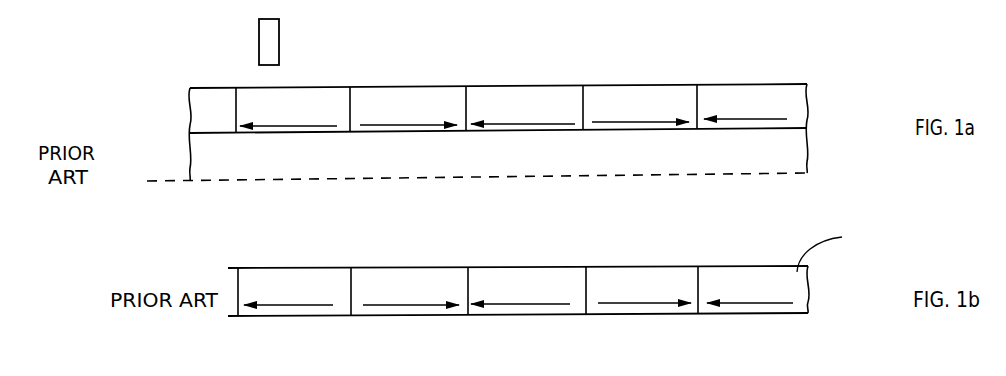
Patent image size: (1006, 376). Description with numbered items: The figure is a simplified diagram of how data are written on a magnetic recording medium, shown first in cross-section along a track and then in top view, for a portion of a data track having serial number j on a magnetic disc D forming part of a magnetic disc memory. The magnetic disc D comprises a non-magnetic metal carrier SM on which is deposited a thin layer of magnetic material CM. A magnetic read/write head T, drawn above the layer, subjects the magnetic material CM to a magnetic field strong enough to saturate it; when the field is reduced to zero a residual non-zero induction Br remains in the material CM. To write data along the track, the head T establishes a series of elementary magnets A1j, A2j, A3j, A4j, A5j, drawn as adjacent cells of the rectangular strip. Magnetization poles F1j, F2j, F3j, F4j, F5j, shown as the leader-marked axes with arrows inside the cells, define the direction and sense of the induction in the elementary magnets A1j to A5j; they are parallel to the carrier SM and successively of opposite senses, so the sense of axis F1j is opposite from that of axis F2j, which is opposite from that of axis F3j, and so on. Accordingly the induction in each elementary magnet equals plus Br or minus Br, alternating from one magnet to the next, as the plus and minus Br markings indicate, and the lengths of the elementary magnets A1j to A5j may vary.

In FIG. 1A, the magnetic read/write head T is at (259, 52).
In FIG. 1A, the thin layer of magnetic material CM is at (190, 118).
In FIG. 1A, the non-magnetic metal carrier SM is at (810, 152).
In FIG. 1A, the magnetic disc D is at (188, 178).
In FIG. 1A, the elementary magnet A1j is at (303, 87).
In FIG. 1B, the elementary magnet A1j is at (277, 322).
In FIG. 1A, the elementary magnet A2j is at (392, 86).
In FIG. 1B, the elementary magnet A2j is at (396, 318).
In FIG. 1A, the elementary magnet A3j is at (525, 86).
In FIG. 1B, the elementary magnet A3j is at (508, 318).
In FIG. 1A, the elementary magnet A4j is at (650, 85).
In FIG. 1B, the elementary magnet A4j is at (625, 318).
In FIG. 1A, the elementary magnet A5j is at (757, 84).
In FIG. 1B, the elementary magnet A5j is at (783, 318).
In FIG. 1A, the magnetization pole F1j is at (297, 128).
In FIG. 1B, the magnetization pole F1j is at (278, 300).
In FIG. 1A, the magnetization pole F2j is at (416, 127).
In FIG. 1B, the magnetization pole F2j is at (394, 300).
In FIG. 1A, the magnetization pole F3j is at (522, 126).
In FIG. 1B, the magnetization pole F3j is at (505, 300).
In FIG. 1A, the magnetization pole F4j is at (638, 124).
In FIG. 1B, the magnetization pole F4j is at (623, 300).
In FIG. 1A, the magnetization pole F5j is at (745, 121).
In FIG. 1B, the magnetization pole F5j is at (733, 300).